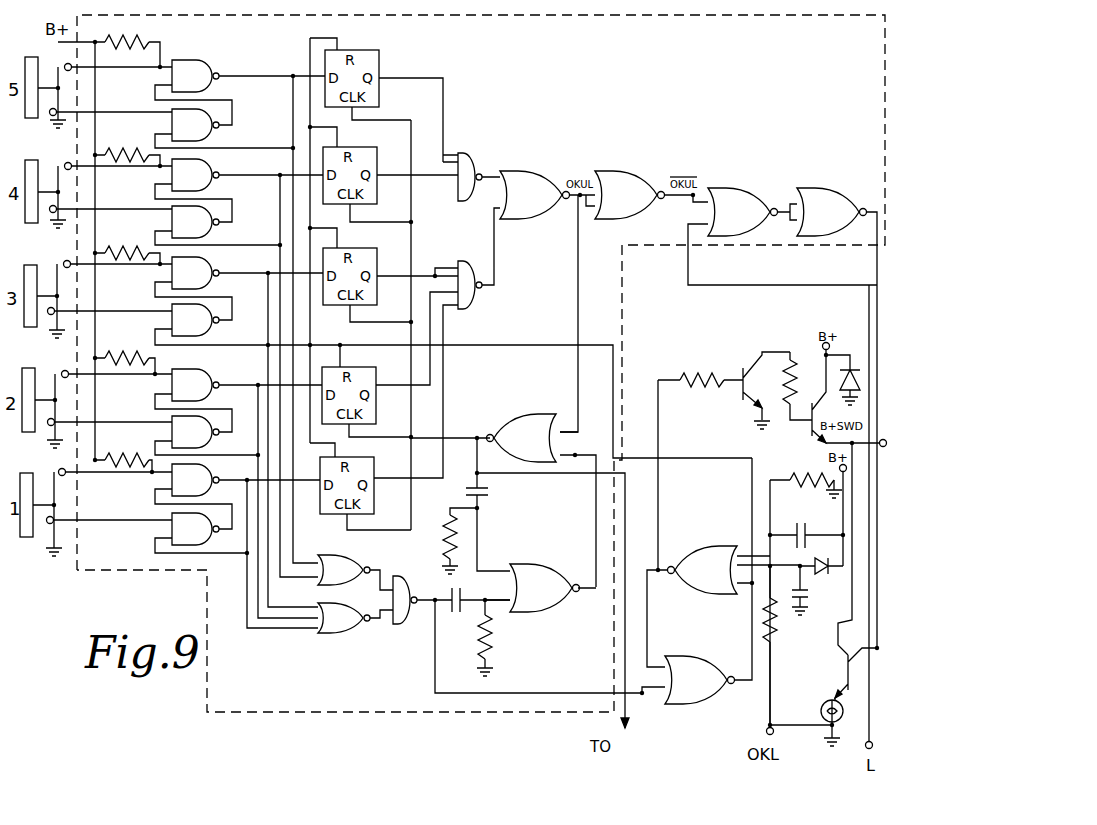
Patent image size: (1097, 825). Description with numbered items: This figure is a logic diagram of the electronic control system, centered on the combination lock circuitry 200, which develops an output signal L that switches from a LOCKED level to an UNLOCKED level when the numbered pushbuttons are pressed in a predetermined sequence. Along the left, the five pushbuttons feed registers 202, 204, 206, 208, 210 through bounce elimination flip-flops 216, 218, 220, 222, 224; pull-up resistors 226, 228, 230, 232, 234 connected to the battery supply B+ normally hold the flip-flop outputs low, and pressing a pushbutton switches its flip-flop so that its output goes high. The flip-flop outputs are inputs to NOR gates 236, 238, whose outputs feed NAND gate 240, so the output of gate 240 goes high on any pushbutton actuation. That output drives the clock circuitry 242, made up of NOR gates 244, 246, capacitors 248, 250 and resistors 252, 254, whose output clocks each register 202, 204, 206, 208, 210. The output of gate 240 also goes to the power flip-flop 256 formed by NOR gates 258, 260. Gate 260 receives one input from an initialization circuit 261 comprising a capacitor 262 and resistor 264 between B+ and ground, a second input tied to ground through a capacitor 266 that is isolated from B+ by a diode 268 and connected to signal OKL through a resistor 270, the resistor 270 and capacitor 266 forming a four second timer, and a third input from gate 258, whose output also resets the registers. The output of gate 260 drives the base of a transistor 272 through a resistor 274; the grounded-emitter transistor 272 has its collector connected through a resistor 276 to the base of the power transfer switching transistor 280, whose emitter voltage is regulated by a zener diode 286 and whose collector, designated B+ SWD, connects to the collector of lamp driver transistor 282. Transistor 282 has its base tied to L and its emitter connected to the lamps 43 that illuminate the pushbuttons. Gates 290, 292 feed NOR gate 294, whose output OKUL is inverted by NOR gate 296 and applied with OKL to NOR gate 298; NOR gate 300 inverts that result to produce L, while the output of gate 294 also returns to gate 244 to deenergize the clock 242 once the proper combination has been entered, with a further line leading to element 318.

The combination lock circuitry 200 is at (207, 682).
The register 202 is at (380, 67).
The register 204 is at (388, 145).
The register 206 is at (388, 248).
The register 208 is at (388, 366).
The register 210 is at (388, 455).
The flip-flop 216 is at (216, 89).
The flip-flop 218 is at (216, 190).
The flip-flop 220 is at (207, 293).
The flip-flop 222 is at (212, 408).
The flip-flop 224 is at (207, 498).
The pull-up resistor 226 is at (133, 42).
The pull-up resistor 228 is at (122, 150).
The pull-up resistor 230 is at (122, 248).
The pull-up resistor 232 is at (128, 345).
The pull-up resistor 234 is at (128, 448).
The NOR gate 236 is at (368, 560).
The NOR gate 238 is at (352, 638).
The NAND gate 240 is at (409, 580).
The clock circuitry 242 is at (526, 530).
The NOR gate 244 is at (537, 420).
The NOR gate 246 is at (531, 565).
The capacitor 248 is at (450, 615).
The capacitor 250 is at (490, 494).
The resistor 252 is at (492, 640).
The resistor 254 is at (446, 529).
The power flip-flop 256 is at (694, 605).
The NOR gate 258 is at (712, 703).
The NOR gate 260 is at (718, 548).
The initialization circuit 261 is at (737, 457).
The capacitor 262 is at (792, 530).
The resistor 264 is at (790, 475).
The capacitor 266 is at (798, 597).
The diode 268 is at (827, 575).
The resistor 270 is at (765, 624).
The transistor 272 is at (740, 374).
The resistor 274 is at (692, 393).
The resistor 276 is at (790, 364).
The power transfer switching transistor 280 is at (812, 413).
The lamp driver transistor 282 is at (846, 666).
The zener diode 286 is at (850, 365).
The gate 290 is at (470, 158).
The gate 292 is at (467, 306).
The NOR gate 294 is at (516, 218).
The NOR gate 296 is at (636, 162).
The NOR gate 298 is at (754, 187).
The NOR gate 300 is at (840, 187).
The external circuit 318 is at (637, 748).
The lamp 43 is at (821, 711).